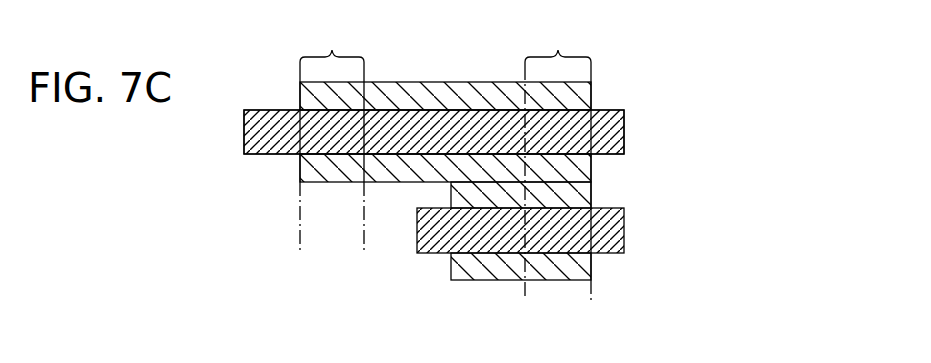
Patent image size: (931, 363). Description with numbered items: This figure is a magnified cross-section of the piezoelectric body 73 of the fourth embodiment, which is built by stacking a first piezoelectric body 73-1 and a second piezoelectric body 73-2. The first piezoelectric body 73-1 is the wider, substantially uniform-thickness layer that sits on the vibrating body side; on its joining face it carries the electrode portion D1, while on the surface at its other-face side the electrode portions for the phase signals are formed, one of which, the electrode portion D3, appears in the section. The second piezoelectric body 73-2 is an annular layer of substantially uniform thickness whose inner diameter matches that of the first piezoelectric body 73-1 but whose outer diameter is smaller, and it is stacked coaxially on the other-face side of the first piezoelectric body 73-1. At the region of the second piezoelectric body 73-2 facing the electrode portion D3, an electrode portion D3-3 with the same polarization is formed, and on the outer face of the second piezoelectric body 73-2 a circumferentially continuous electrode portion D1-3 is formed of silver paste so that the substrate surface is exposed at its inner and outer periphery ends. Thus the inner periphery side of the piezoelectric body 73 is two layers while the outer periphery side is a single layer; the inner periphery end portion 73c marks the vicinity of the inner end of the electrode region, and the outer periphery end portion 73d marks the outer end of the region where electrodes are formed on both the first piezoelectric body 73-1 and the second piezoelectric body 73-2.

The piezoelectric body 73 is at (662, 62).
The first piezoelectric body 73-1 is at (624, 131).
The second piezoelectric body 73-2 is at (617, 232).
The inner periphery end portion 73c is at (558, 161).
The outer periphery end portion 73d is at (332, 138).
The electrode portion D1 is at (445, 88).
The electrode portion D3 is at (390, 170).
The electrode portion D3-3 is at (582, 193).
The electrode portion D1-3 is at (582, 263).